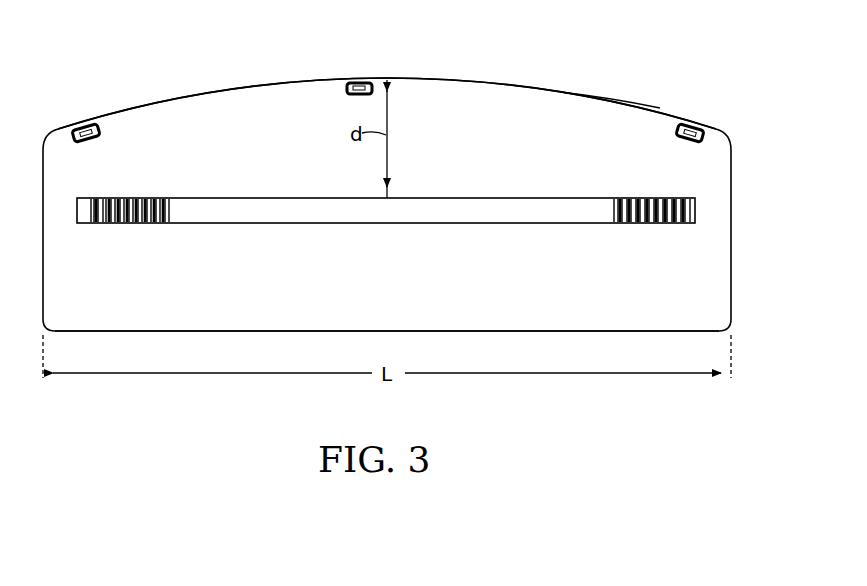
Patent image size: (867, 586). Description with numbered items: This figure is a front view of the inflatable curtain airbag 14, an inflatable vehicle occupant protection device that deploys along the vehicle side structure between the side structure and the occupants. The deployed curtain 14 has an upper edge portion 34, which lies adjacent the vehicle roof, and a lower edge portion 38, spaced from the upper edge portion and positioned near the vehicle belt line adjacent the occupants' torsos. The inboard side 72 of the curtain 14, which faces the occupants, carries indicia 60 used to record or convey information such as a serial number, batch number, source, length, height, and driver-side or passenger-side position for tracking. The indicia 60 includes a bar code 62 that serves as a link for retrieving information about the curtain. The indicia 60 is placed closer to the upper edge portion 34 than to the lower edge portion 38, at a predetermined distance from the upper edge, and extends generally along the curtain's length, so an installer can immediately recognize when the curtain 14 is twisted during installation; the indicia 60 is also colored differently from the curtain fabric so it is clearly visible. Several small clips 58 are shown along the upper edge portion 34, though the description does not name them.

The inflatable curtain airbag 14 is at (693, 234).
The upper edge portion 34 is at (552, 89).
The lower edge portion 38 is at (527, 332).
The clips 58 is at (83, 116).
The indicia 60 is at (461, 185).
The bar code 62 is at (637, 225).
The inboard side 72 is at (611, 117).